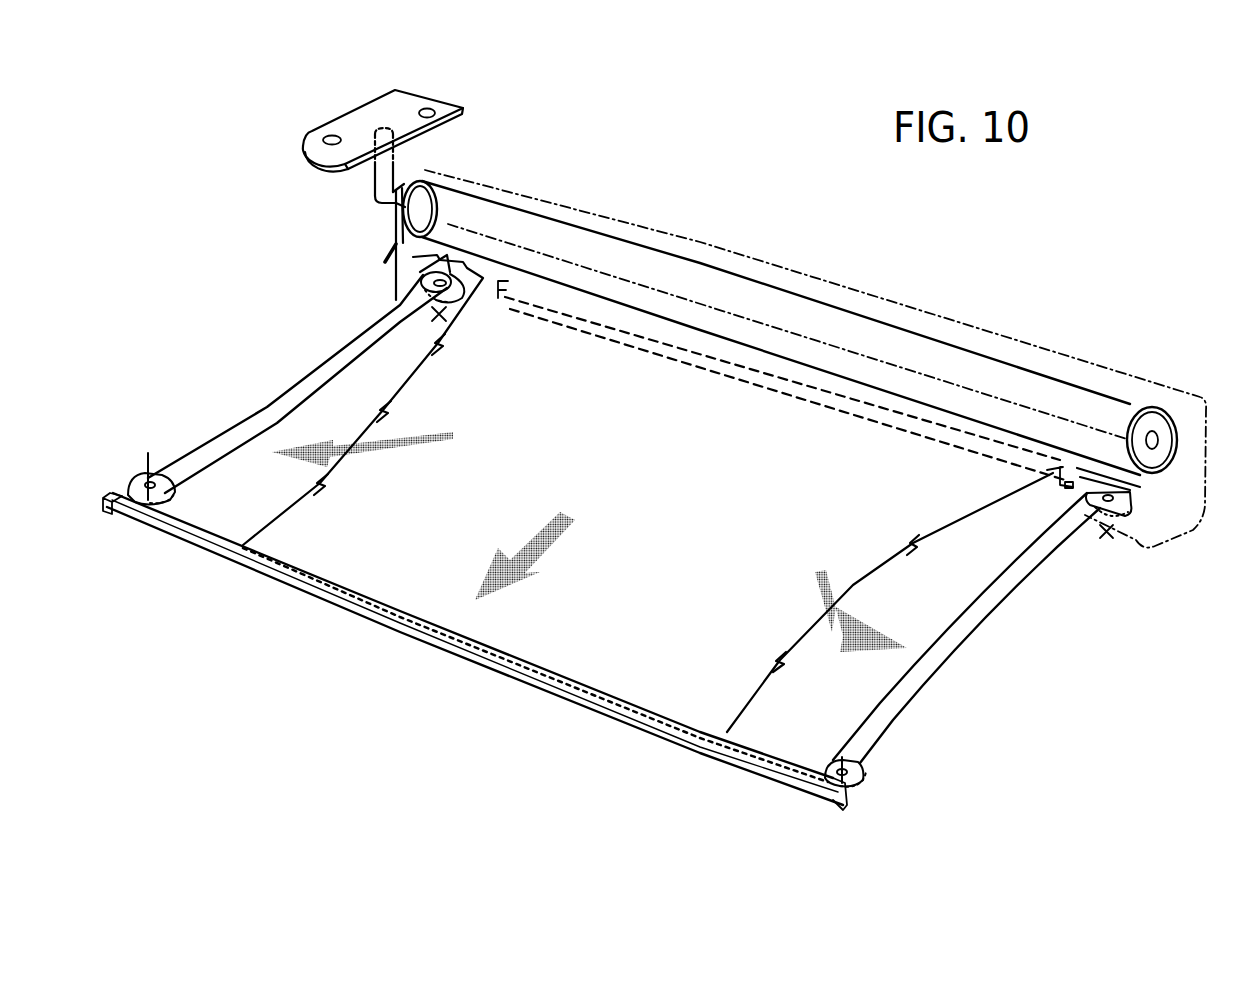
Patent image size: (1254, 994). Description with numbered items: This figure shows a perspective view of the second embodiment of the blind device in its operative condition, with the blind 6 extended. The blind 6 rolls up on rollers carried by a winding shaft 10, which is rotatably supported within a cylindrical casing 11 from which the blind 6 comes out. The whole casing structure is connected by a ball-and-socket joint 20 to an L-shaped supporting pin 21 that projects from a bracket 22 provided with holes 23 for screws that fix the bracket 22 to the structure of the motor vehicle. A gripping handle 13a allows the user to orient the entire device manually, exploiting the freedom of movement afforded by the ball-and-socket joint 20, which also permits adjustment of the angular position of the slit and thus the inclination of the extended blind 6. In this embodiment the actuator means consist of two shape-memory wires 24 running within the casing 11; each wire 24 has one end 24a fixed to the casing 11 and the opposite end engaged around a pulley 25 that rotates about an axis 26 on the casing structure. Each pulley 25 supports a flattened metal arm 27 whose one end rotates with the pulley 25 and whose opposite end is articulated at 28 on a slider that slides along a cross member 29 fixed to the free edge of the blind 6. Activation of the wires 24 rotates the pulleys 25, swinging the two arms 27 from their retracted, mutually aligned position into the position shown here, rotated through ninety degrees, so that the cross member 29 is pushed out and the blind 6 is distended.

The blind 6 is at (550, 643).
The winding shaft 10 is at (1150, 446).
The cylindrical casing 11 is at (614, 211).
The gripping handle 13a is at (388, 252).
The ball-and-socket joint 20 is at (404, 190).
The L-shaped supporting pin 21 is at (373, 187).
The bracket 22 is at (372, 94).
The holes 23 is at (431, 110).
The shape-memory wires 24 is at (650, 340).
The end of wire 24a is at (500, 308).
The pulley 25 is at (425, 281).
The axis 26 is at (443, 305).
The flattened metal arm 27 is at (267, 410).
The articulation 28 is at (148, 468).
The cross member 29 is at (218, 540).